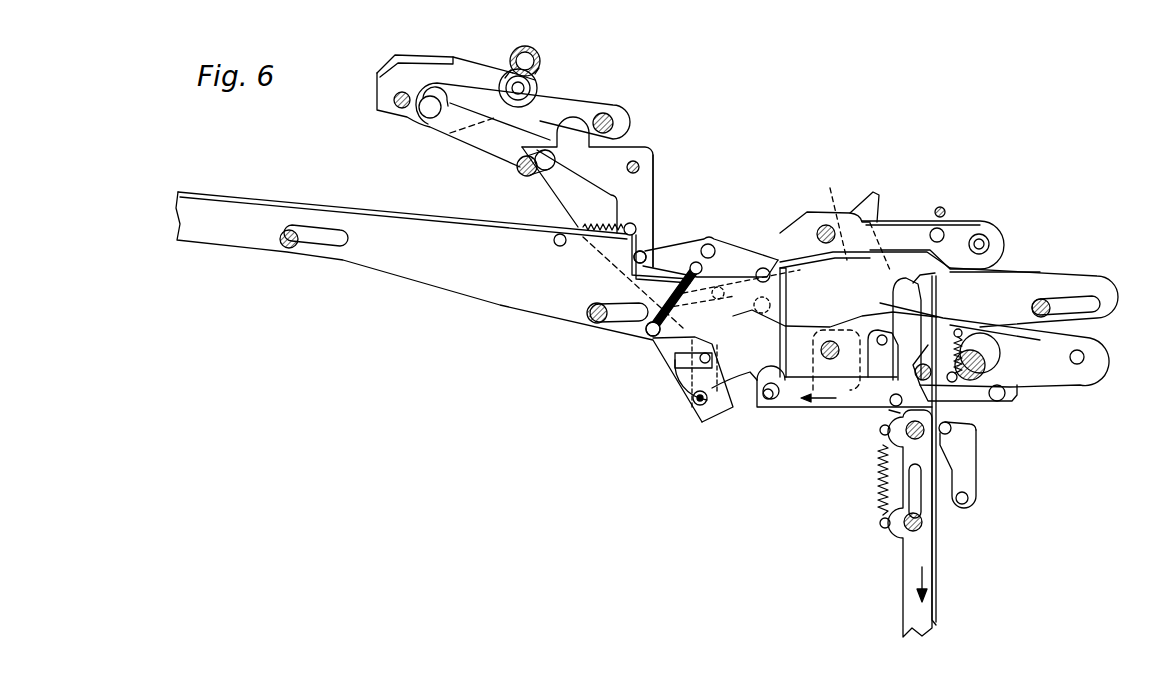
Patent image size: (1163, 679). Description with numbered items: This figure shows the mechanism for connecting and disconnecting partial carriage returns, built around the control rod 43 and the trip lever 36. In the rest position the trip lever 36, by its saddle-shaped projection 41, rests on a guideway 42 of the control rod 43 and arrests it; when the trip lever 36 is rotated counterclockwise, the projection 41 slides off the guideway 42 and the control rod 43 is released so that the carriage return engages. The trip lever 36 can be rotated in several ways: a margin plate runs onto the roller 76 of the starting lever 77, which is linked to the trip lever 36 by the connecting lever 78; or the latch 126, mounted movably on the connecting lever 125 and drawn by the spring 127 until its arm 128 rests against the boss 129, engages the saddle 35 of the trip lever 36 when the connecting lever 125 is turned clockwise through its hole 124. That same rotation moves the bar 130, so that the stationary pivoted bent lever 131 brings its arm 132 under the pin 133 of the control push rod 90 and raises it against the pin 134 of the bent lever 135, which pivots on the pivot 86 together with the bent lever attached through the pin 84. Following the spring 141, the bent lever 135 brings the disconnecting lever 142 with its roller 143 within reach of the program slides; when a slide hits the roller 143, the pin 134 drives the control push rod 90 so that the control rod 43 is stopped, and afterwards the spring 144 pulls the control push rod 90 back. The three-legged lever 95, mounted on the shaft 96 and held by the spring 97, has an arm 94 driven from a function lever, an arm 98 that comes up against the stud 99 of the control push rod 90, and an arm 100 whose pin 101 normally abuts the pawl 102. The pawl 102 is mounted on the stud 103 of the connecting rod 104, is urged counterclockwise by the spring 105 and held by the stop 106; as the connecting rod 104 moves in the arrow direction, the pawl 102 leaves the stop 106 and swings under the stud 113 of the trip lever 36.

The control rod 43 is at (443, 265).
The disconnecting lever 142 is at (477, 86).
The starting lever 77 is at (567, 97).
The roller 76 is at (536, 57).
The roller 143 is at (545, 63).
The connecting lever 78 is at (606, 116).
The pivot 86 is at (638, 153).
The bent lever 135 is at (642, 192).
The pin 84 is at (517, 180).
The spring 141 is at (637, 218).
The pin 134 is at (633, 258).
The spring 144 is at (690, 262).
The arm 132 is at (640, 346).
The stud 99 is at (713, 233).
The control push rod 90 is at (729, 252).
The pin 133 is at (750, 240).
The arm 98 is at (790, 238).
The shaft 96 is at (829, 224).
The three-legged lever 95 is at (855, 197).
The stud 113 is at (893, 276).
The saddle 35 is at (917, 276).
The spring 97 is at (943, 207).
The arm 94 is at (960, 236).
The spring 127 is at (981, 233).
The boss 129 is at (988, 332).
The arm 128 is at (1000, 337).
The connecting lever 125 is at (1055, 350).
The hole 124 is at (1083, 350).
The latch 126 is at (1000, 402).
The stop 106 is at (974, 437).
The stud 103 is at (920, 433).
The pawl 102 is at (962, 487).
The spring 105 is at (892, 503).
The connecting rod 104 is at (920, 556).
The bent lever 131 is at (757, 390).
The trip lever 36 is at (767, 403).
The bar 130 is at (797, 402).
The arm 100 is at (866, 378).
The pin 101 is at (891, 406).
The saddle-shaped projection 41 is at (673, 368).
The guideway 42 is at (690, 392).